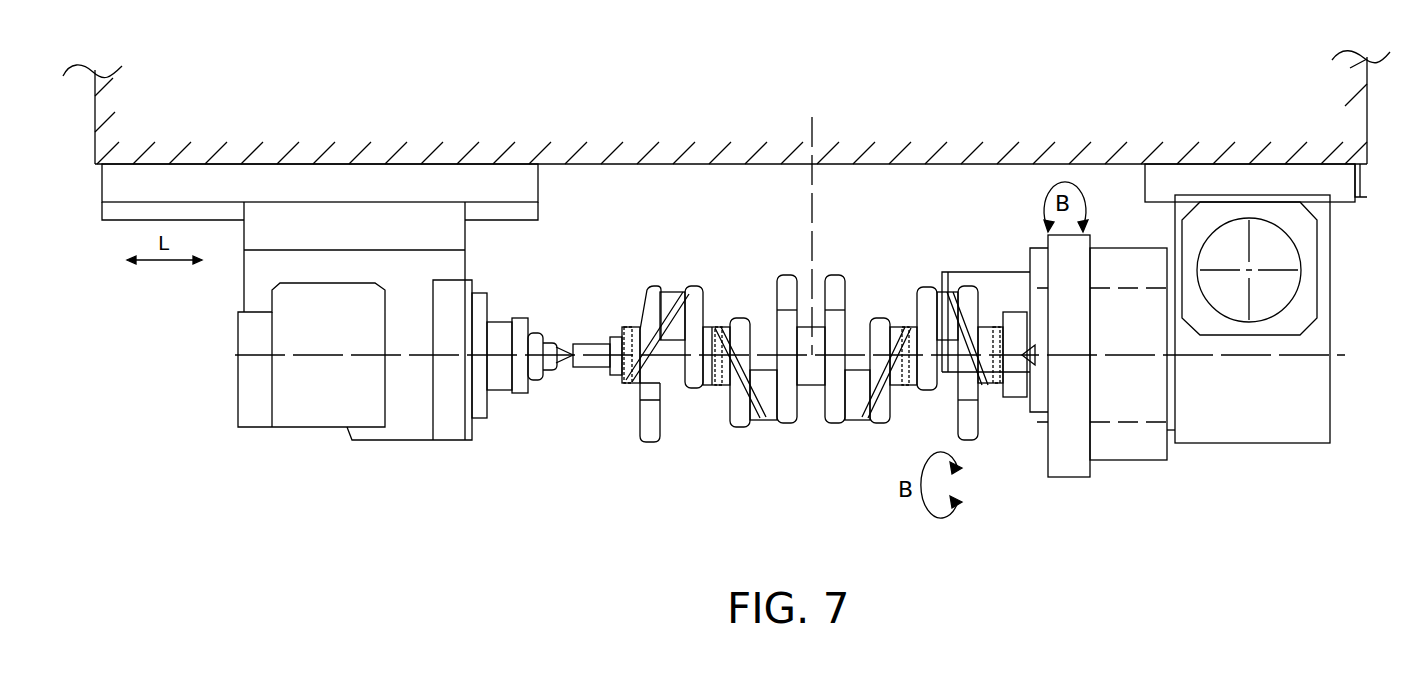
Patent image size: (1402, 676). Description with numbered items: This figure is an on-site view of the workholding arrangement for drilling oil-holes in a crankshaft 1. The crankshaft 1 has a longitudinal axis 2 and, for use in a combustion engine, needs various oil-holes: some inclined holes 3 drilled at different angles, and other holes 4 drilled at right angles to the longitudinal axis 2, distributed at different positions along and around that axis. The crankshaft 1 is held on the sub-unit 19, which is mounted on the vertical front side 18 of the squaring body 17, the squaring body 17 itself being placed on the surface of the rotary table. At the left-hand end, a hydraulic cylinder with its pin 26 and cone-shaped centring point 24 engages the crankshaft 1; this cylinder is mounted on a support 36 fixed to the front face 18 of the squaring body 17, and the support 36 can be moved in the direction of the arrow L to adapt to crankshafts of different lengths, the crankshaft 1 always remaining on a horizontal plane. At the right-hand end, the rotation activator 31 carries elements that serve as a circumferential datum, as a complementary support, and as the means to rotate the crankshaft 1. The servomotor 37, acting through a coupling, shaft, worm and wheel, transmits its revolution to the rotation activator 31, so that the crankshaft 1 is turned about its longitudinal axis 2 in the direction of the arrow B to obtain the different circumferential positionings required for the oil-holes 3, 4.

The crankshaft 1 is at (813, 374).
The longitudinal axis 2 is at (583, 372).
The inclined oil-holes 3 is at (658, 355).
The oil-holes at right angles 4 is at (627, 332).
The squaring body 17 is at (347, 160).
The front side 18 is at (966, 168).
The sub-unit 19 is at (630, 584).
The cone-shaped centring point 24 is at (563, 345).
The pin 26 is at (502, 392).
The rotation activator 31 is at (1066, 455).
The support 36 is at (412, 402).
The servomotor 37 is at (1290, 216).